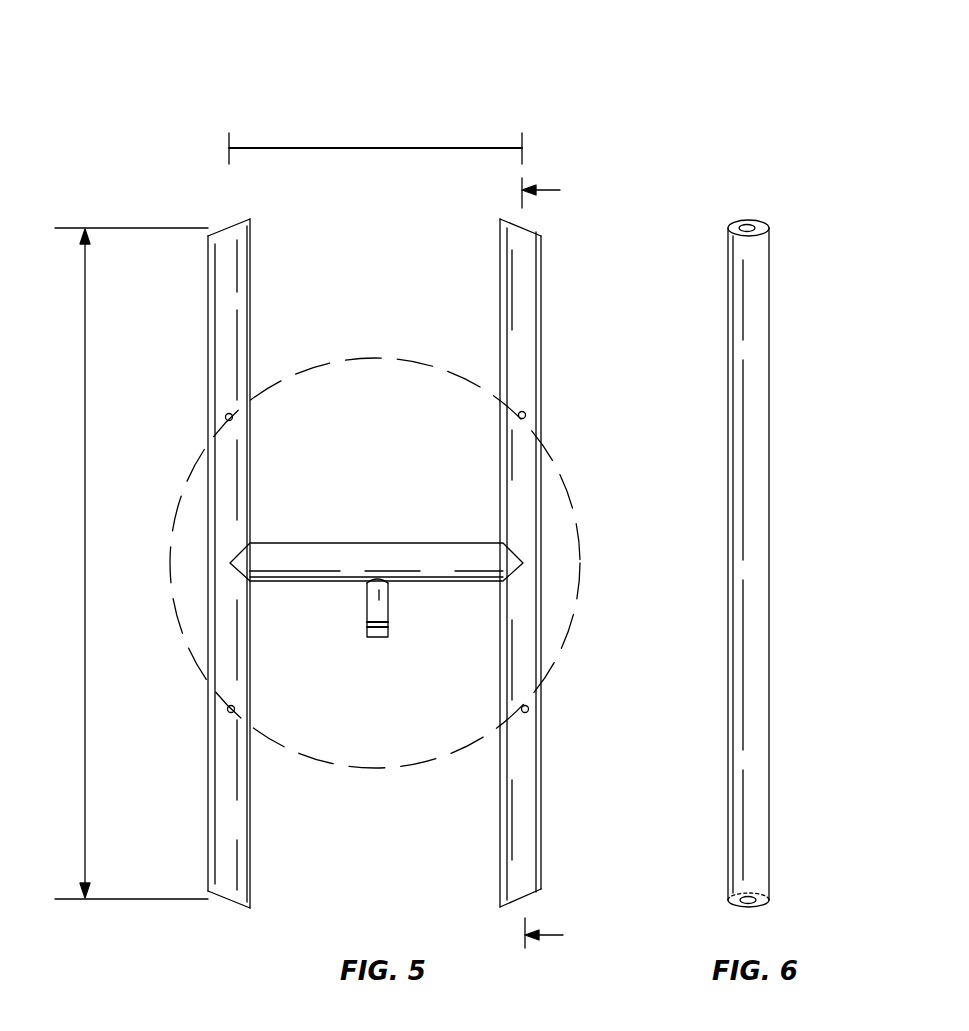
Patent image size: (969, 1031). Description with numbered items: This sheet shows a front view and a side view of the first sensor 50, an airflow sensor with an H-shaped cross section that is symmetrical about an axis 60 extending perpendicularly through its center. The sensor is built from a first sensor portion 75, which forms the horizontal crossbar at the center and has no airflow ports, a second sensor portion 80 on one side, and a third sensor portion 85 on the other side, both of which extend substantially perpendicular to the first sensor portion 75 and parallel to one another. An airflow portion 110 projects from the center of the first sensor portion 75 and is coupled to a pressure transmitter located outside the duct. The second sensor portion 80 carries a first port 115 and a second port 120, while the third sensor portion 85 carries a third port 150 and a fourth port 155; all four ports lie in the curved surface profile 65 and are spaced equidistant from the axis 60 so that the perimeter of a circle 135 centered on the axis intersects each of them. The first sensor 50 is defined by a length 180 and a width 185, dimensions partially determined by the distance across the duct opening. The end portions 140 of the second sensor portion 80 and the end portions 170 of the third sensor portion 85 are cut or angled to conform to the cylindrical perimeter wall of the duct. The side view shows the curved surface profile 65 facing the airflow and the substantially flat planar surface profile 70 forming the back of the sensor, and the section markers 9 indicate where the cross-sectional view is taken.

In FIG. 5, the first sensor 50 is at (382, 80).
In FIG. 5, the axis 60 is at (377, 563).
In FIG. 6, the curved surface profile 65 is at (750, 535).
In FIG. 6, the planar surface profile 70 is at (769, 386).
In FIG. 5, the first sensor portion 75 is at (345, 556).
In FIG. 5, the second sensor portion 80 is at (232, 485).
In FIG. 5, the third sensor portion 85 is at (513, 487).
In FIG. 5, the airflow portion 110 is at (383, 612).
In FIG. 5, the first port 115 is at (225, 416).
In FIG. 5, the second port 120 is at (227, 709).
In FIG. 5, the circle 135 is at (352, 358).
In FIG. 5, the end portions 140 is at (225, 232).
In FIG. 5, the third port 150 is at (526, 412).
In FIG. 5, the fourth port 155 is at (529, 709).
In FIG. 5, the end portions 170 is at (531, 226).
In FIG. 6, the end portions 170 is at (762, 221).
In FIG. 5, the length 180 is at (85, 358).
In FIG. 5, the width 185 is at (432, 147).
In FIG. 5, the section line 9- 9 is at (550, 563).